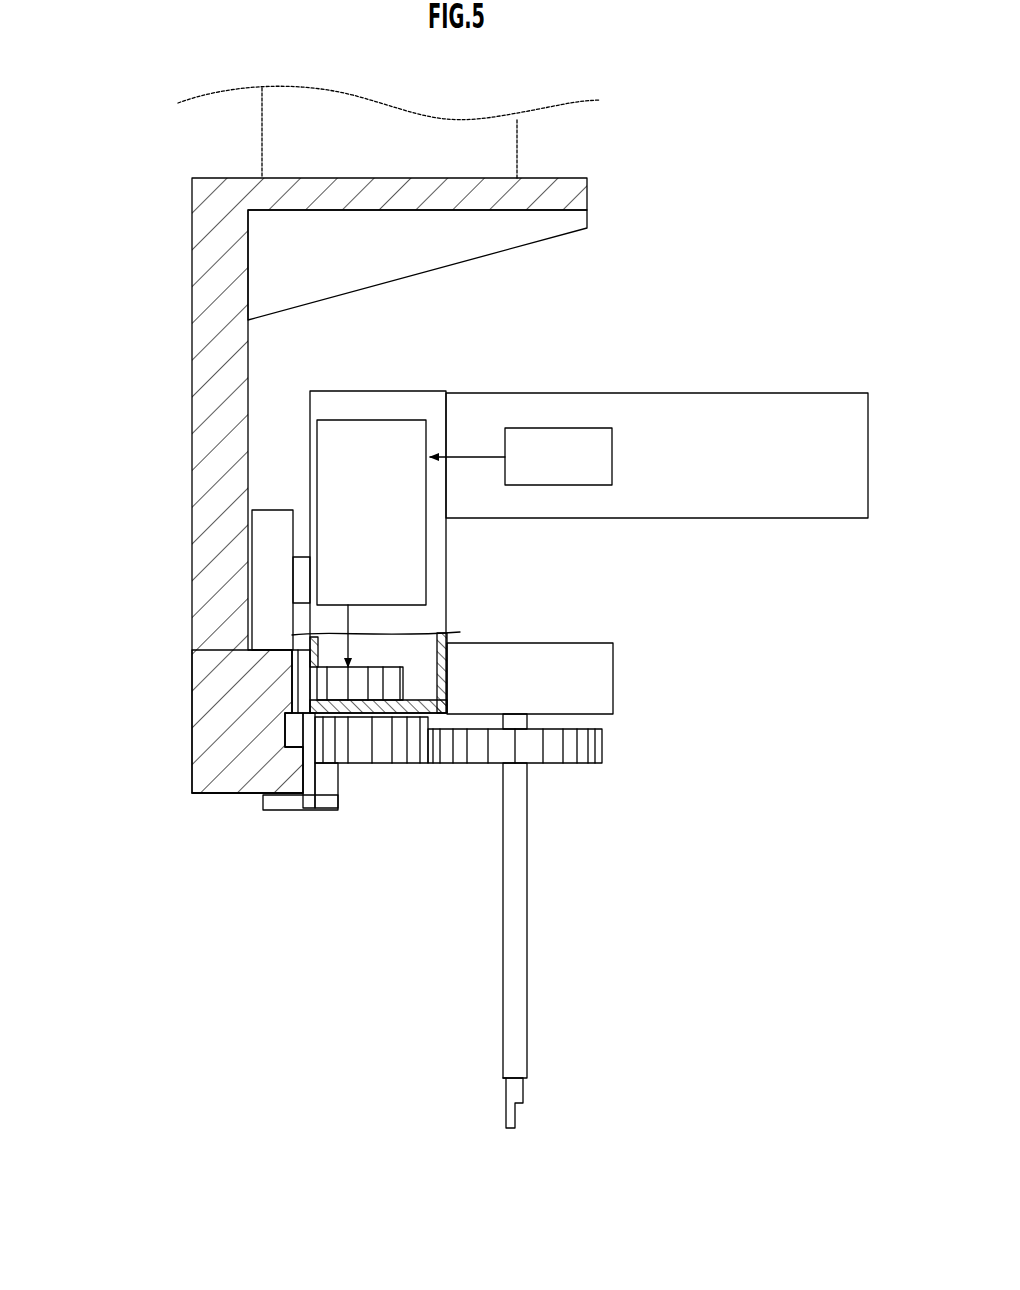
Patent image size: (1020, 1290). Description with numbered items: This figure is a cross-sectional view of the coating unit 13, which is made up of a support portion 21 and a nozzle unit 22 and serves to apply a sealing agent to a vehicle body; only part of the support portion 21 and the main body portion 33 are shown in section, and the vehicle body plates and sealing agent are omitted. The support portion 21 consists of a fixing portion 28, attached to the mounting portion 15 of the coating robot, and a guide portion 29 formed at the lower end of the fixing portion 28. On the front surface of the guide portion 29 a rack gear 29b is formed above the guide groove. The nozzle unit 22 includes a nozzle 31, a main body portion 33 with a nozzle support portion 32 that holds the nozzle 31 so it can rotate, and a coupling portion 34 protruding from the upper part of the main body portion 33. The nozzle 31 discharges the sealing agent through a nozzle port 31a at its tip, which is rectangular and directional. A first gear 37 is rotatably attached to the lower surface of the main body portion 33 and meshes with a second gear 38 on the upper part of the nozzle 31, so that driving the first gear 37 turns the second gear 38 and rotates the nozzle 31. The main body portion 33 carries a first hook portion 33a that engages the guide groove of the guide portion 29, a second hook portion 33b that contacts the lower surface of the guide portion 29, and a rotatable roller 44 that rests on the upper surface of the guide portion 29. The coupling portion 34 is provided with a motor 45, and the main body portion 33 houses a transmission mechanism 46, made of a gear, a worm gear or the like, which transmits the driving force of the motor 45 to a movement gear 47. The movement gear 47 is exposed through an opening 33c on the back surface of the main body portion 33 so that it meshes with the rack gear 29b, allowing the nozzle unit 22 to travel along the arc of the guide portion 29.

The coating unit 13 is at (803, 210).
The mounting portion 15 is at (500, 153).
The support portion 21 is at (319, 485).
The nozzle unit 22 is at (490, 748).
The fixing portion 28 is at (203, 440).
The guide portion 29 is at (205, 688).
The rack gear 29b is at (270, 700).
The nozzle 31 is at (556, 971).
The nozzle port 31a is at (508, 1128).
The nozzle support portion 32 is at (526, 676).
The main body portion 33 is at (408, 402).
The first hook portion 33a is at (305, 745).
The second hook portion 33b is at (268, 810).
The opening 33c is at (292, 660).
The coupling portion 34 is at (772, 425).
The first gear 37 is at (360, 750).
The second gear 38 is at (570, 755).
The roller 44 is at (272, 525).
The motor 45 is at (555, 428).
The transmission mechanism 46 is at (346, 420).
The movement gear 47 is at (383, 667).